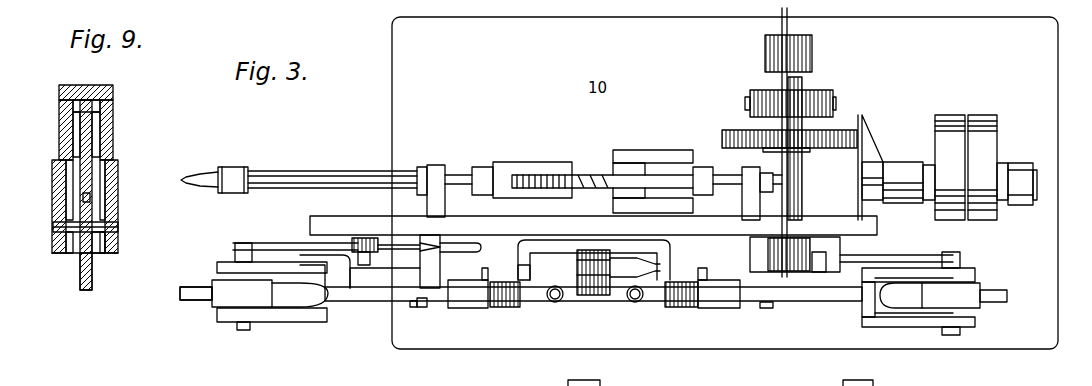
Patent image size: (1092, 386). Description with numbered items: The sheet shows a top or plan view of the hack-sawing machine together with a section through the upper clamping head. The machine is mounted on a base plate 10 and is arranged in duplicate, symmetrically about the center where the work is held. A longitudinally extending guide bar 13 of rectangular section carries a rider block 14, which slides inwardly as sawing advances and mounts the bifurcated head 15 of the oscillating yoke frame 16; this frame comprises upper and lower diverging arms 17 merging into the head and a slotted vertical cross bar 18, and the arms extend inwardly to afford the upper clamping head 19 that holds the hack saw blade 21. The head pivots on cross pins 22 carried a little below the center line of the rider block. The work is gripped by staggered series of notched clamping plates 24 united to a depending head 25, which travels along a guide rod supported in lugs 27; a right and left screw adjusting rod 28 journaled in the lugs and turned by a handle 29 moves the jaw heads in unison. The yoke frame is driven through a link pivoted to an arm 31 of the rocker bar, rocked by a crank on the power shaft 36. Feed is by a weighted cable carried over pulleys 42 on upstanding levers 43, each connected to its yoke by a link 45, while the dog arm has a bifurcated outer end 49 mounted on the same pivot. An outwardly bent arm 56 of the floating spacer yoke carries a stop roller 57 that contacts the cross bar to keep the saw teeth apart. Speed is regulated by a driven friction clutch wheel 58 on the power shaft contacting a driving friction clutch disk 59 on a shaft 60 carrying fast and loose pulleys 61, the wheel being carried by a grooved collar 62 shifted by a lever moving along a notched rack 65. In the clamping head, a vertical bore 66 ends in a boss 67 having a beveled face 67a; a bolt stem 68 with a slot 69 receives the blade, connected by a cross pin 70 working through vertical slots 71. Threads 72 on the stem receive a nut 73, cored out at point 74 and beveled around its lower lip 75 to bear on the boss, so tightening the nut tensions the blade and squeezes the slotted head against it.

In FIG. 3, the base plate 10 is at (725, 183).
In FIG. 3, the guide bar 13 is at (181, 292).
In FIG. 3, the rider block 14 is at (223, 290).
In FIG. 3, the bifurcated head 15 is at (297, 316).
In FIG. 3, the oscillating yoke frame 16 is at (422, 301).
In FIG. 3, the arm 17 is at (418, 309).
In FIG. 3, the cross bar 18 is at (470, 309).
In FIG. 9, the upper clamping head 19 is at (119, 228).
In FIG. 3, the upper clamping head 19 is at (535, 308).
In FIG. 9, the hack saw blade 21 is at (82, 274).
In FIG. 3, the cross pin 22 is at (238, 245).
In FIG. 3, the clamping plate 24 is at (540, 196).
In FIG. 3, the depending head 25 is at (481, 167).
In FIG. 3, the lug 27 is at (433, 165).
In FIG. 3, the screw adjusting rod 28 is at (312, 170).
In FIG. 3, the handle 29 is at (233, 168).
In FIG. 3, the arm of rocker bar 31 is at (620, 301).
In FIG. 3, the power shaft 36 is at (800, 82).
In FIG. 3, the pulley 42 is at (372, 239).
In FIG. 3, the upstanding lever 43 is at (353, 268).
In FIG. 3, the link 45 is at (287, 249).
In FIG. 3, the bifurcated outer end 49 is at (303, 308).
In FIG. 3, the outwardly bent arm 56 is at (570, 236).
In FIG. 3, the stop roller 57 is at (531, 273).
In FIG. 3, the driven friction clutch wheel 58 is at (828, 133).
In FIG. 3, the driving friction clutch disk 59 is at (864, 144).
In FIG. 3, the shaft 60 is at (1038, 185).
In FIG. 3, the fast and loose pulleys 61 is at (976, 115).
In FIG. 3, the grooved collar 62 is at (828, 92).
In FIG. 3, the notched rack 65 is at (767, 62).
In FIG. 9, the vertical bore 66 is at (60, 196).
In FIG. 9, the boss 67 is at (56, 170).
In FIG. 9, the beveled face 67a is at (60, 161).
In FIG. 9, the bolt stem 68 is at (116, 166).
In FIG. 9, the slot 69 is at (91, 198).
In FIG. 9, the cross pin 70 is at (112, 238).
In FIG. 9, the vertical slot 71 is at (60, 245).
In FIG. 9, the threads 72 is at (92, 121).
In FIG. 9, the nut 73 is at (62, 112).
In FIG. 3, the nut 73 is at (561, 301).
In FIG. 9, the cored out point 74 is at (100, 156).
In FIG. 9, the lower lip 75 is at (62, 152).